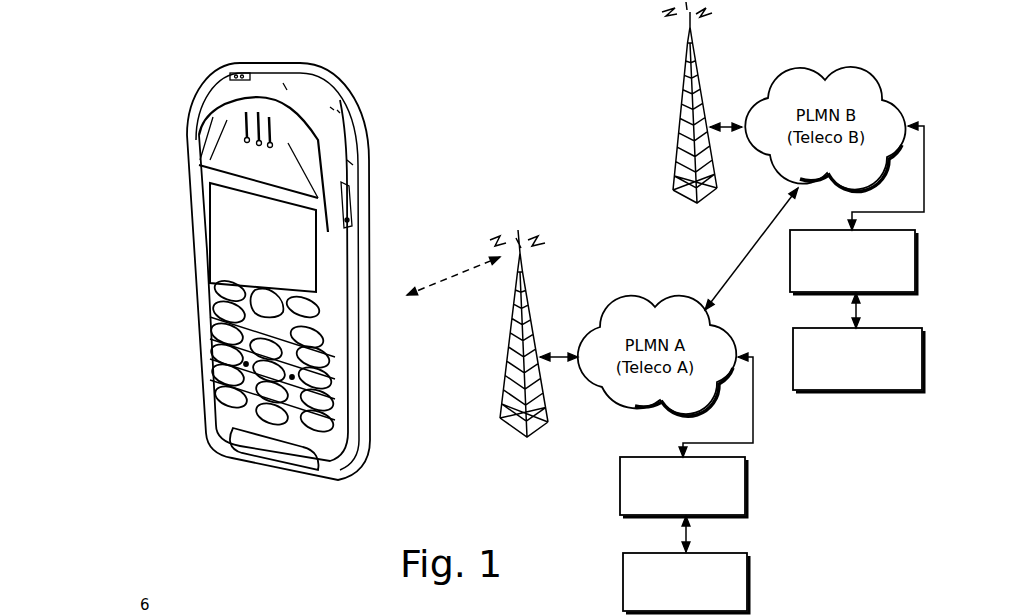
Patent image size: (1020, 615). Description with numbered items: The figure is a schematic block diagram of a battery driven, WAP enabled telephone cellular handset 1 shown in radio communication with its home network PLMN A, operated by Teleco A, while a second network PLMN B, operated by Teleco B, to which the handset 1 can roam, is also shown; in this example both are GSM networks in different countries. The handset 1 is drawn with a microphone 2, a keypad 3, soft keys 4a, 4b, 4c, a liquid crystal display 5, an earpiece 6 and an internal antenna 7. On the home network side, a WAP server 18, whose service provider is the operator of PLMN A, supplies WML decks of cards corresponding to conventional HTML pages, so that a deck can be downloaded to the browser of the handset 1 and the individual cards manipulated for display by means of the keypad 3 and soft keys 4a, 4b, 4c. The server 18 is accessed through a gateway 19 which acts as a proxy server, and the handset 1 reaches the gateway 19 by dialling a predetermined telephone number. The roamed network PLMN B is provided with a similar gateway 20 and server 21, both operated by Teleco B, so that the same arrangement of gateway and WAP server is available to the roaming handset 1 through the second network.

The telephone cellular handset 1 is at (360, 400).
The microphone 2 is at (273, 458).
The keypad 3 is at (200, 364).
The soft key 4a is at (218, 288).
The soft key 4b is at (313, 318).
The soft key 4c is at (262, 306).
The liquid crystal display 5 is at (228, 225).
The earpiece 6 is at (247, 117).
The internal antenna 7 is at (343, 128).
The WAP server 18 is at (745, 585).
The gateway 19 is at (748, 492).
The gateway 20 is at (915, 283).
The server 21 is at (859, 393).